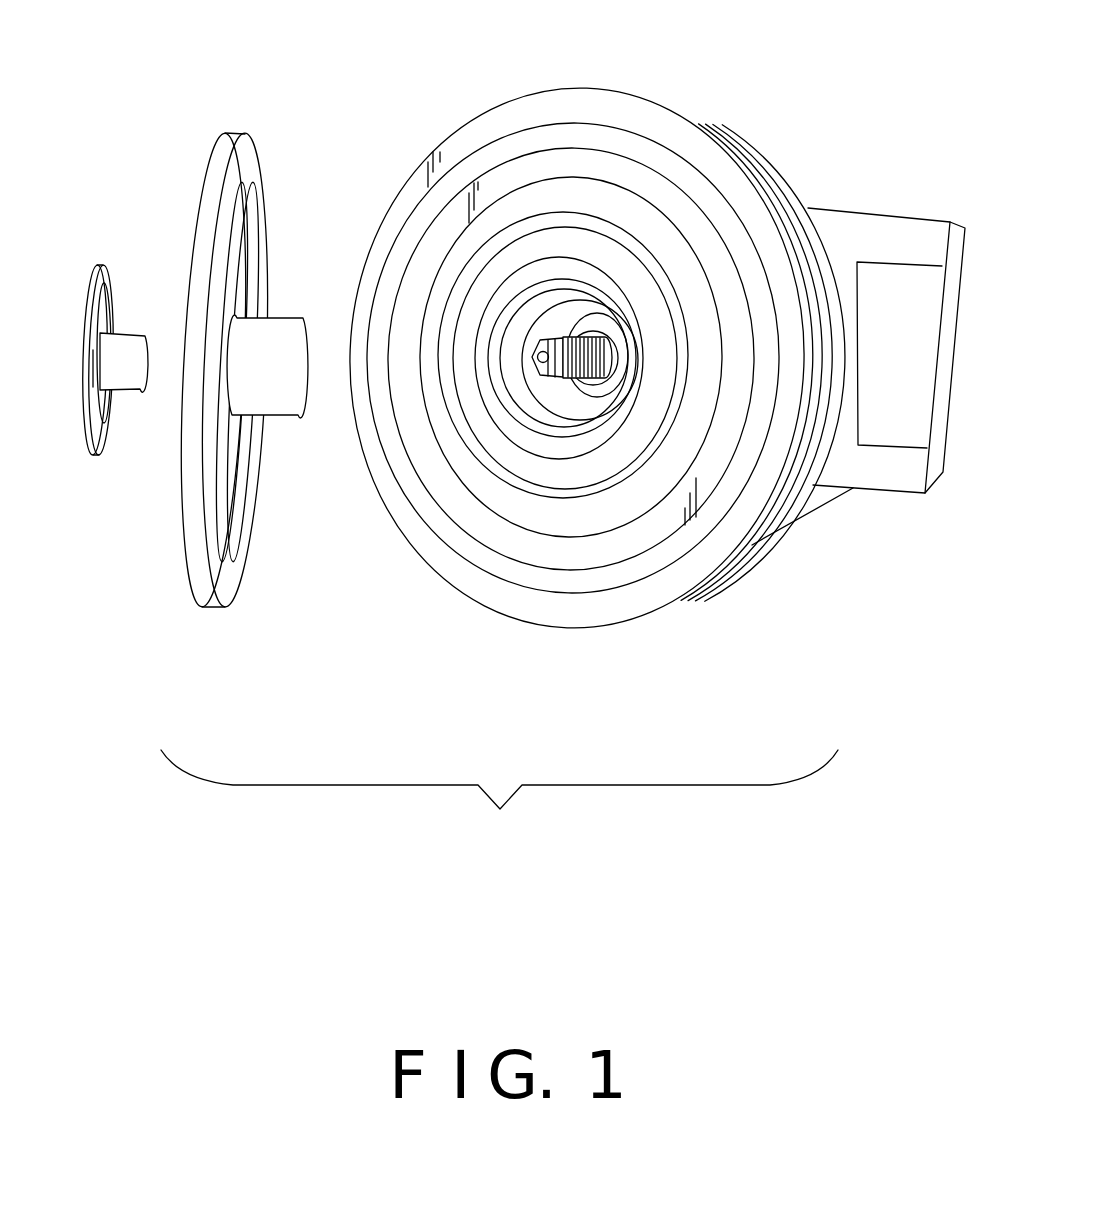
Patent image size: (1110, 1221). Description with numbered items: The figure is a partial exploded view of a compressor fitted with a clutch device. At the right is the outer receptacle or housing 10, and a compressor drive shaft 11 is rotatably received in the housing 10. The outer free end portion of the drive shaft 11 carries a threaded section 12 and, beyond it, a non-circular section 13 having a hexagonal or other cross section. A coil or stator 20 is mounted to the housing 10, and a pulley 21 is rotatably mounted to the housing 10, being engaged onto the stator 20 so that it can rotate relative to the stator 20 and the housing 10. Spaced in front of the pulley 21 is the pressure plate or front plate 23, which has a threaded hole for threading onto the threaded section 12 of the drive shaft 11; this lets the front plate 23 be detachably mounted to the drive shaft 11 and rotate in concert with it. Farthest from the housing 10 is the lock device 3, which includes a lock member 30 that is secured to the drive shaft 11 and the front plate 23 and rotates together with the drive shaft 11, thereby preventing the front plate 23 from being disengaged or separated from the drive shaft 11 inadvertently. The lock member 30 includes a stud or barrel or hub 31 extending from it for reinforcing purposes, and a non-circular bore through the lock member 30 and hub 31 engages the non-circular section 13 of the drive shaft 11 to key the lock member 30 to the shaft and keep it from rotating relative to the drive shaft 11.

The lock device 3 is at (105, 339).
The housing 10 is at (907, 290).
The compressor drive shaft 11 is at (613, 362).
The threaded section 12 is at (579, 380).
The non-circular section 13 is at (543, 369).
The stator 20 is at (625, 165).
The pulley 21 is at (810, 287).
The front plate 23 is at (220, 150).
The lock member 30 is at (107, 270).
The hub 31 is at (130, 383).